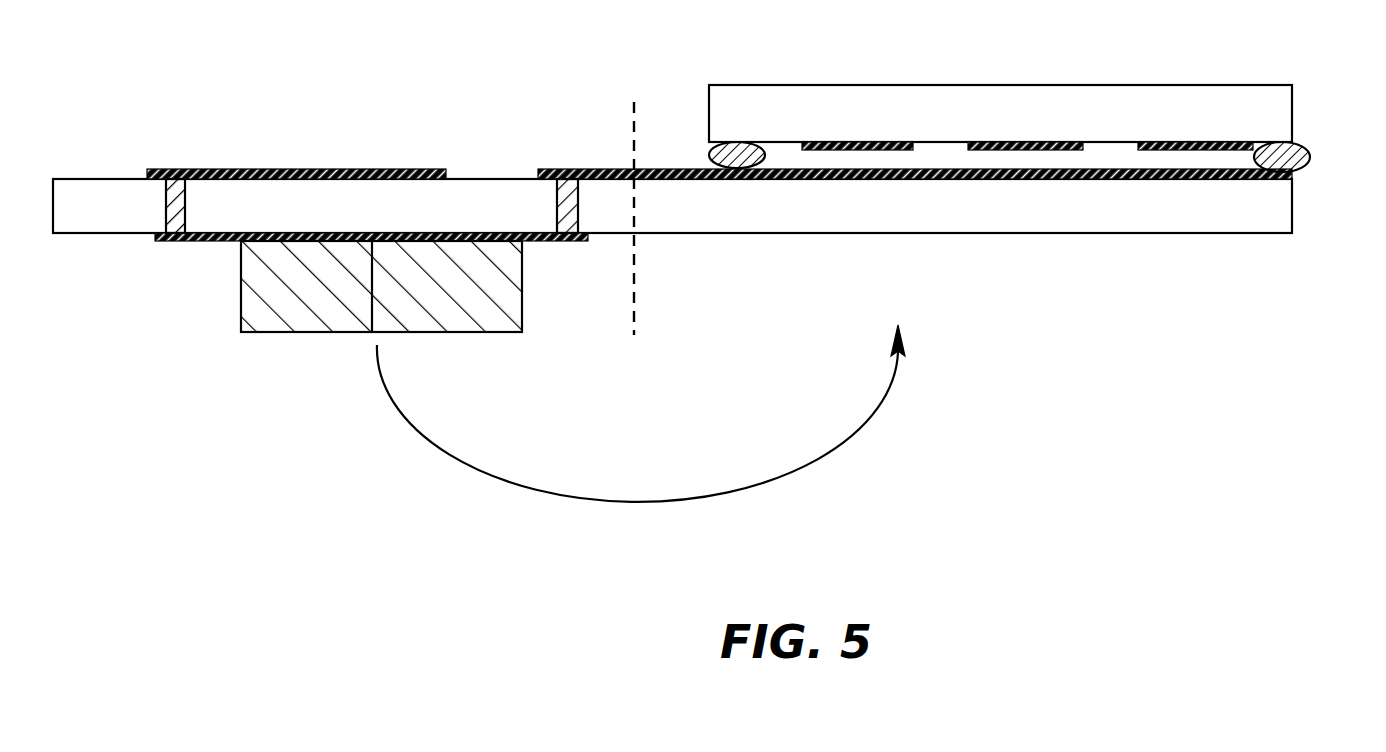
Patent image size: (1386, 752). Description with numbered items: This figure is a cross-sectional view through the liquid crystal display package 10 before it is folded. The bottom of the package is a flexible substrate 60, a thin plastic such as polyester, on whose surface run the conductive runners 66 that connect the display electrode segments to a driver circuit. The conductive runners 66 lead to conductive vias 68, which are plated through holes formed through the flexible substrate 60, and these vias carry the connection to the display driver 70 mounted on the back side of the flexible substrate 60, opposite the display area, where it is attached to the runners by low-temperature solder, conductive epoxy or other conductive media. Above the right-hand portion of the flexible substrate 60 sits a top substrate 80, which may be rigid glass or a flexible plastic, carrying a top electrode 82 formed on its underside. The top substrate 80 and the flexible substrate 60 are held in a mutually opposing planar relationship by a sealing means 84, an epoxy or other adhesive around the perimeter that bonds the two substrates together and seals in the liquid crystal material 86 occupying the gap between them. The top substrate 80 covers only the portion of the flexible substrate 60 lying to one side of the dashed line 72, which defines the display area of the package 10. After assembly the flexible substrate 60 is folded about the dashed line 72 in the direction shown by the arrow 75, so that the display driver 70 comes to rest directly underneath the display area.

The liquid crystal display package 10 is at (1207, 409).
The flexible substrate 60 is at (1195, 205).
The conductive runner 66 is at (997, 170).
The conductive via 68 is at (557, 210).
The display driver 70 is at (265, 316).
The dashed line 72 is at (643, 280).
The arrow 75 is at (797, 465).
The top substrate 80 is at (727, 109).
The top electrode 82 is at (1170, 140).
The sealing means 84 is at (1293, 158).
The liquid crystal material 86 is at (937, 150).